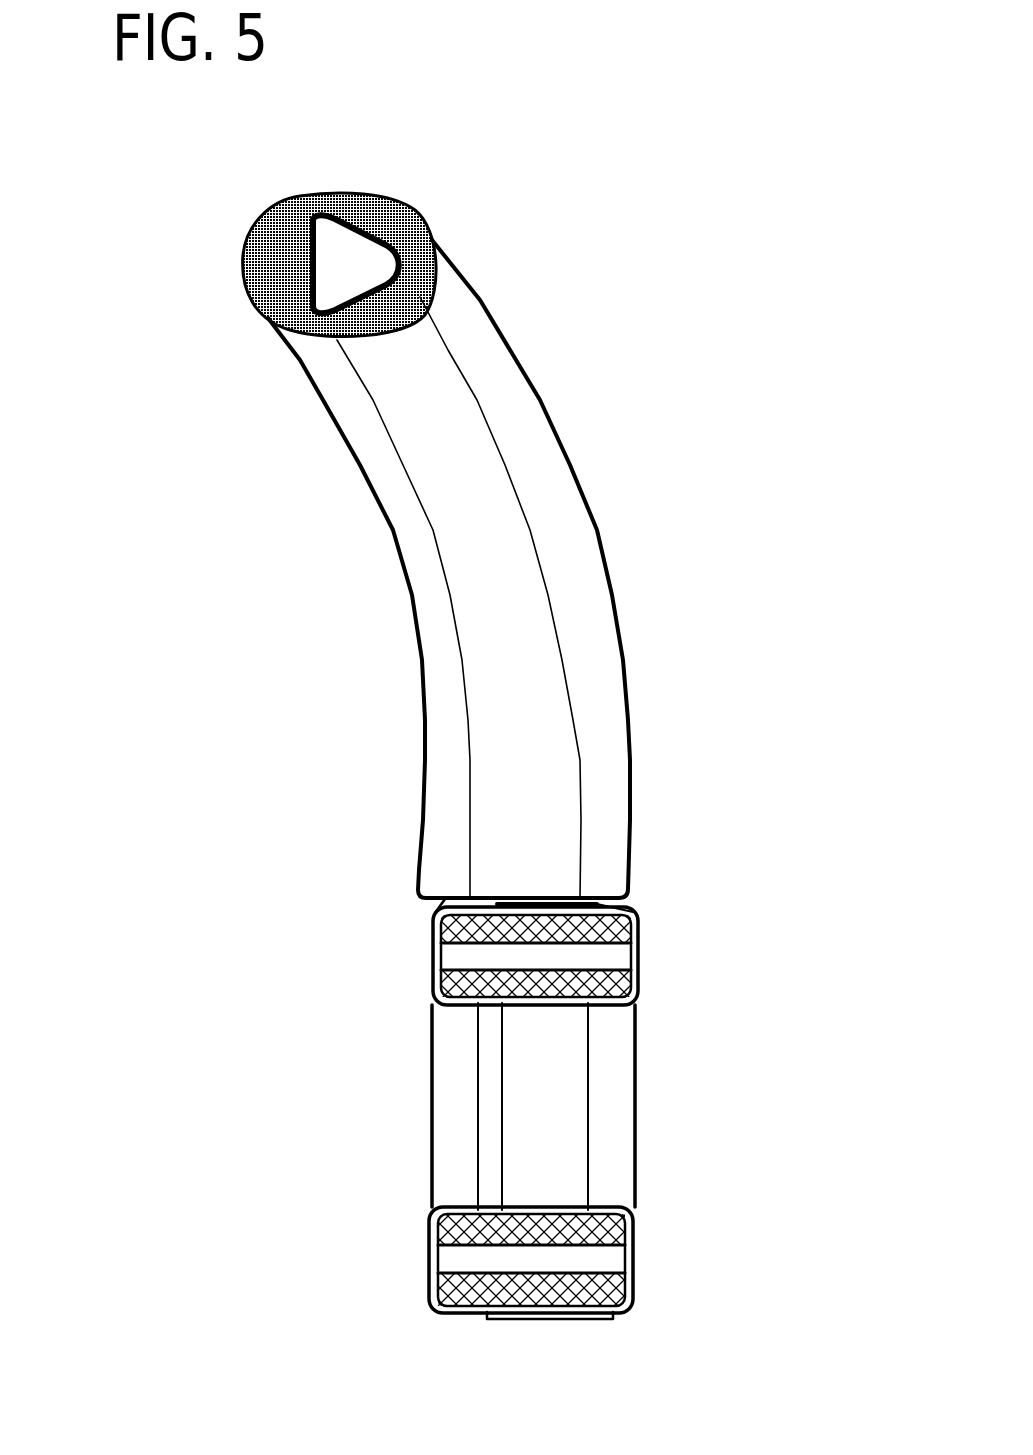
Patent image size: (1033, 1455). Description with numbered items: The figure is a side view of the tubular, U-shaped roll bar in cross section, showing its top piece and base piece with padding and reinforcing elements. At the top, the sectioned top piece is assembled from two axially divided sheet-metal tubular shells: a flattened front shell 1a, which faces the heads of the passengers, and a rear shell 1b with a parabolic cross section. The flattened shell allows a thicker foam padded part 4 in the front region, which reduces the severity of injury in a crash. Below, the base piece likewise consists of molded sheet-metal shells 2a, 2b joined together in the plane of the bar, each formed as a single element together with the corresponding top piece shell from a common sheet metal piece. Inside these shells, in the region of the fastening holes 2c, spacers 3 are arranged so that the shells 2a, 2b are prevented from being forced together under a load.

The front shell 1a is at (277, 283).
The rear shell 1b is at (417, 215).
The base piece shell 2a is at (440, 1000).
The base piece shell 2b is at (618, 1100).
The fastening holes 2c is at (430, 957).
The spacers 3 is at (588, 927).
The foam padded part 4 is at (266, 243).